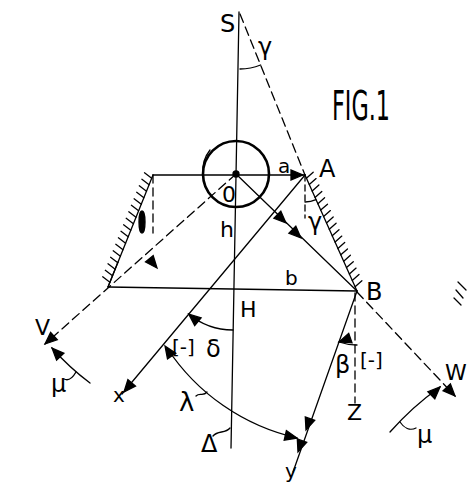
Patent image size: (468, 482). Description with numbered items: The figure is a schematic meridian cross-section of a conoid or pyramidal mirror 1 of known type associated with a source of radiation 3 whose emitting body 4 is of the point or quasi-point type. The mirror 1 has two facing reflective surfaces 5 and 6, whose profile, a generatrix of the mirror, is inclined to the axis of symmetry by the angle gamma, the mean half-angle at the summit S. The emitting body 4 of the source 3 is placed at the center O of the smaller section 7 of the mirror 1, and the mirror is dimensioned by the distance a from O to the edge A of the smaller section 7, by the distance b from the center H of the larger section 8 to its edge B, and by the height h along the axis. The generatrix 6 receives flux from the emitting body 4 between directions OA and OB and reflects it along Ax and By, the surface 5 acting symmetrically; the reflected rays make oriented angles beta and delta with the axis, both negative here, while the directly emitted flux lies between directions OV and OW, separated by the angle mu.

The conoid or pyramidal mirror 1 is at (150, 259).
The source of radiation 3 is at (228, 152).
The emitting body 4 is at (210, 150).
The reflective surface 5 is at (113, 275).
The reflective surface 6 is at (339, 252).
The smaller section 7 is at (188, 176).
The larger section 8 is at (148, 288).